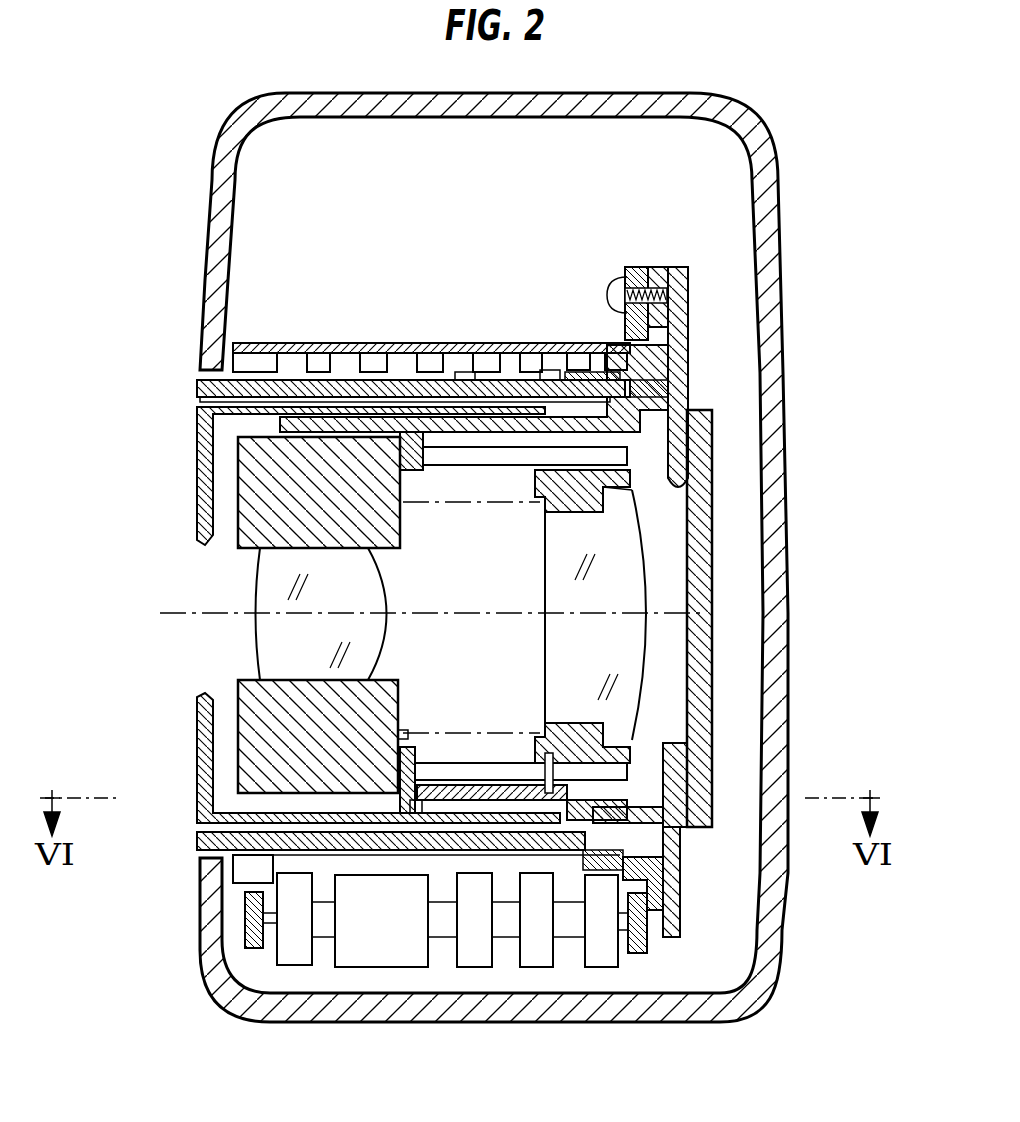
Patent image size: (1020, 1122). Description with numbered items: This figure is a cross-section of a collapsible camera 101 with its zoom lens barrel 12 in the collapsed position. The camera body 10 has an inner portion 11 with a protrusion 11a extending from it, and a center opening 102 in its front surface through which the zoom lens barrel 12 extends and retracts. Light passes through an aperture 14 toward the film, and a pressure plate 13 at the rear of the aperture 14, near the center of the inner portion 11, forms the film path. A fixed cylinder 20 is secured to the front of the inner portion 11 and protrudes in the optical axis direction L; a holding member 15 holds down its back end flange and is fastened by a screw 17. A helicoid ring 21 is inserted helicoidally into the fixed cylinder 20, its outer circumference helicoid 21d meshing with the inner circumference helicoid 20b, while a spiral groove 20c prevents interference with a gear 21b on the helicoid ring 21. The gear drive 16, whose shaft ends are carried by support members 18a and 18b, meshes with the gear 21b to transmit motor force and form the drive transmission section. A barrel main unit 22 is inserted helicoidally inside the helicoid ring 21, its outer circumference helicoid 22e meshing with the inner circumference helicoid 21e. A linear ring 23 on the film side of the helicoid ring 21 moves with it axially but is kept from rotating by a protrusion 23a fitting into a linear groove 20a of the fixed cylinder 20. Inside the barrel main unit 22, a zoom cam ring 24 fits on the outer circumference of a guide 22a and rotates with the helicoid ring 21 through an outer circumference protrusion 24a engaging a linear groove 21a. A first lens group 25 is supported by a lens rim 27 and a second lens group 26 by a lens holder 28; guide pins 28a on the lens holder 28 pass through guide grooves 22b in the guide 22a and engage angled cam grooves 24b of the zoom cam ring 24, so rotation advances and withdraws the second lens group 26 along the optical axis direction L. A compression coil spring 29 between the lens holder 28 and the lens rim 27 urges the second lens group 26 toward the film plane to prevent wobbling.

The camera 101 is at (278, 62).
The center opening 102 is at (221, 614).
The camera body 10 is at (788, 432).
The inner portion 11 is at (756, 602).
The protrusion 11a is at (657, 810).
The zoom lens barrel 12 is at (281, 320).
The pressure plate 13 is at (705, 495).
The aperture 14 is at (625, 768).
The holding member 15 is at (634, 268).
The gear drive 16 is at (462, 990).
The screw 17 is at (668, 297).
The support member 18a is at (260, 948).
The support member 18b is at (633, 953).
The fixed cylinder 20 is at (380, 311).
The linear groove 20a is at (427, 363).
The inner circumference helicoid 20b is at (367, 365).
The spiral groove 20c is at (337, 363).
The helicoid ring 21 is at (377, 679).
The linear groove 21a is at (418, 805).
The gear 21b is at (577, 867).
The outer circumference helicoid 21d is at (575, 372).
The inner circumference helicoid 21e is at (465, 380).
The barrel main unit 22 is at (487, 537).
The guide 22a is at (403, 452).
The guide grooves 22b is at (570, 797).
The outer circumference helicoid 22e is at (545, 365).
The linear ring 23 is at (567, 385).
The protrusion 23a is at (662, 372).
The zoom cam ring 24 is at (348, 904).
The outer circumference protrusion 24a is at (548, 795).
The cam grooves 24b is at (510, 800).
The first lens group 25 is at (270, 656).
The second lens group 26 is at (630, 650).
The lens rim 27 is at (240, 472).
The lens holder 28 is at (695, 602).
The guide pins 28a is at (600, 735).
The compression coil spring 29 is at (472, 518).
The optical axis direction L is at (170, 613).